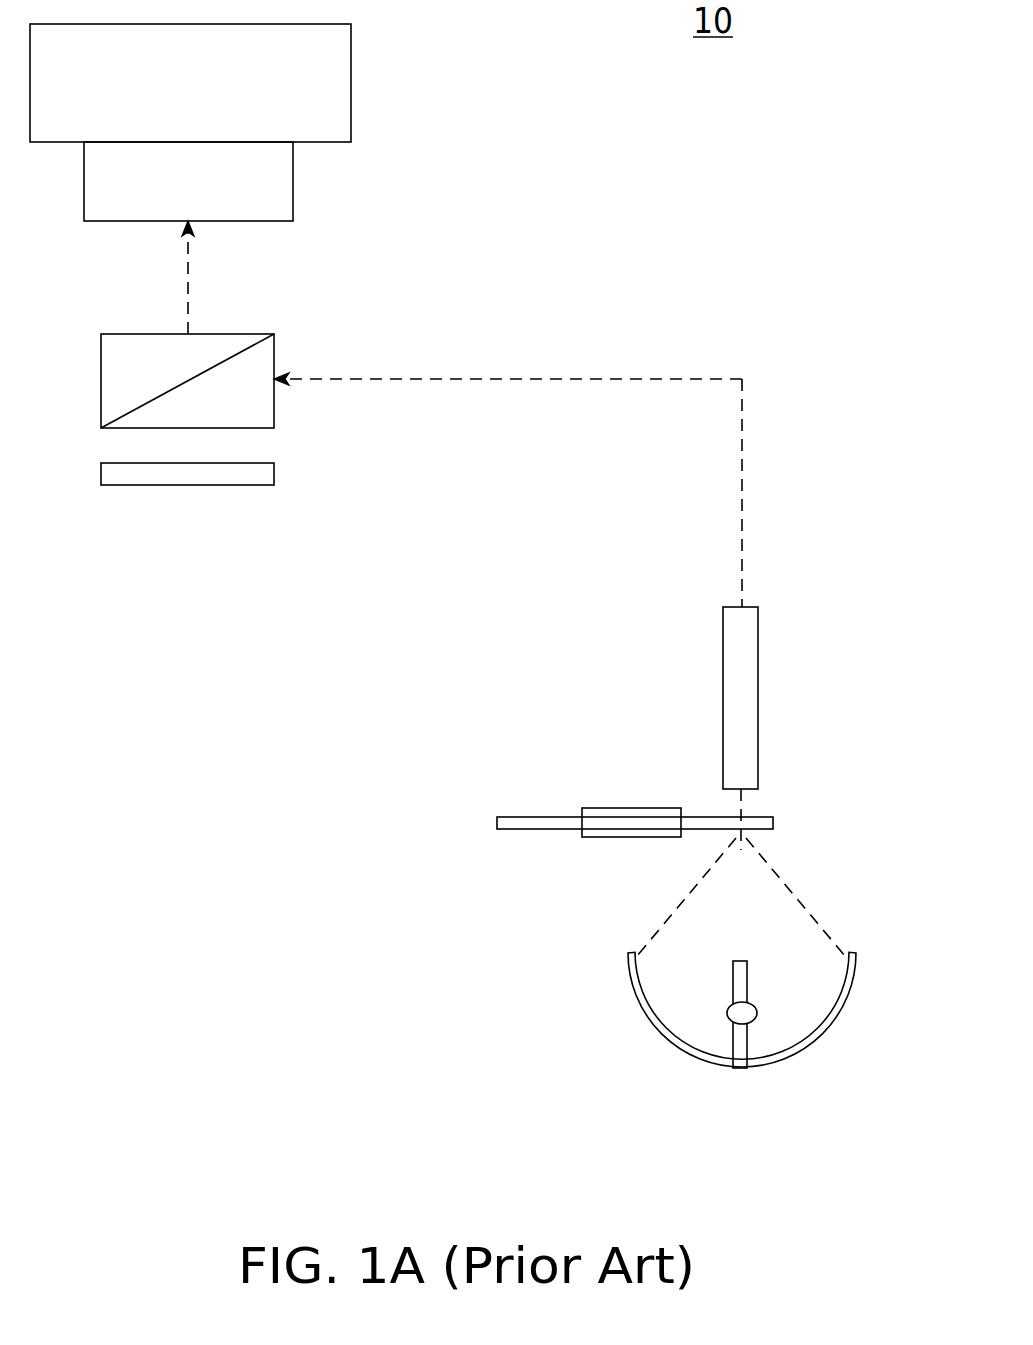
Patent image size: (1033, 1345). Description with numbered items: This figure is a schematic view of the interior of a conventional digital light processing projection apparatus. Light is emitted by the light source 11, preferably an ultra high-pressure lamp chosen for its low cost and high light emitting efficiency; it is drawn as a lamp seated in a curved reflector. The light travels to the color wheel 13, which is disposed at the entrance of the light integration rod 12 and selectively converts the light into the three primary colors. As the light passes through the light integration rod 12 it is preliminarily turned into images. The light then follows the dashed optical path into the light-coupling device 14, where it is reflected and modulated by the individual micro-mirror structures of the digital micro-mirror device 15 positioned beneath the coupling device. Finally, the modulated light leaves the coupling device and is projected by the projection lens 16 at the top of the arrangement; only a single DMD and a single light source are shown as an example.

The light source 11 is at (822, 1030).
The light integration rod 12 is at (758, 761).
The color wheel 13 is at (773, 823).
The light-coupling device 14 is at (274, 337).
The digital micro-mirror device 15 is at (274, 472).
The projection lens 16 is at (293, 199).